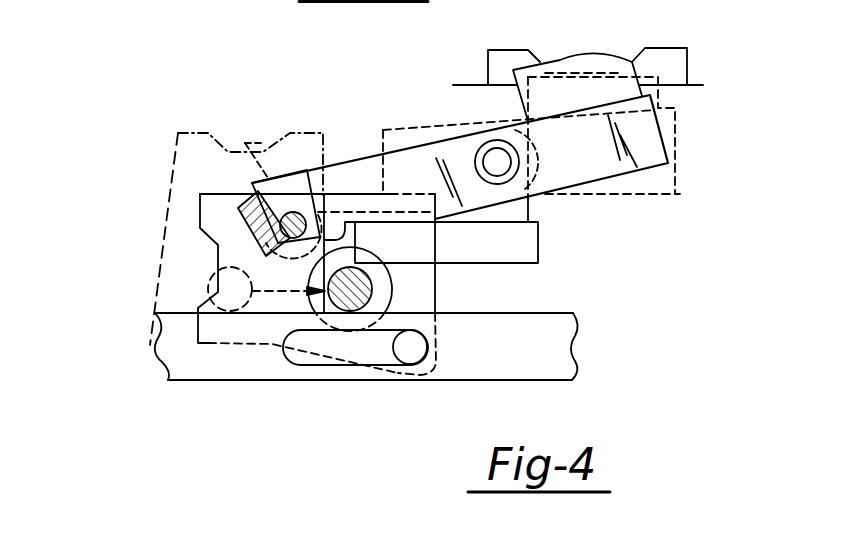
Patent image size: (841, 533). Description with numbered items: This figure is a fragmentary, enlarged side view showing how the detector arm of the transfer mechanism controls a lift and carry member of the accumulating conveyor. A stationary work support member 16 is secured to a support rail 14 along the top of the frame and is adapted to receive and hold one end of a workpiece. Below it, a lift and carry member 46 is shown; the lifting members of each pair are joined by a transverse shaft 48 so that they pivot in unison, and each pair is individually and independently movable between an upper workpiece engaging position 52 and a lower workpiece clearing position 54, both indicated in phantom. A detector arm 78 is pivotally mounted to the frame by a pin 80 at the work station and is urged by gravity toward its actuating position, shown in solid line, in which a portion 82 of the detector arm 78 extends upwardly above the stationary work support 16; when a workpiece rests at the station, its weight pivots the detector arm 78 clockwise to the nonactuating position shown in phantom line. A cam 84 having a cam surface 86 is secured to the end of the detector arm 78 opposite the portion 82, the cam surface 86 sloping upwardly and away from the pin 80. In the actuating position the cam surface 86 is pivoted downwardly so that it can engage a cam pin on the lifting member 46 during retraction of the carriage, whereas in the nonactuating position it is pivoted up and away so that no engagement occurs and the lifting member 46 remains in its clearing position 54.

The support rail 14 is at (700, 84).
The work support member 16 is at (687, 48).
The lift and carry member 46 is at (148, 347).
The shaft 48 is at (393, 286).
The upper workpiece engaging position 52 is at (209, 133).
The lower workpiece clearing position 54 is at (275, 343).
The detector arm 78 is at (603, 178).
The pin 80 is at (496, 160).
The portion of the detector arm 82 is at (598, 53).
The cam 84 is at (240, 210).
The cam surface 86 is at (252, 191).